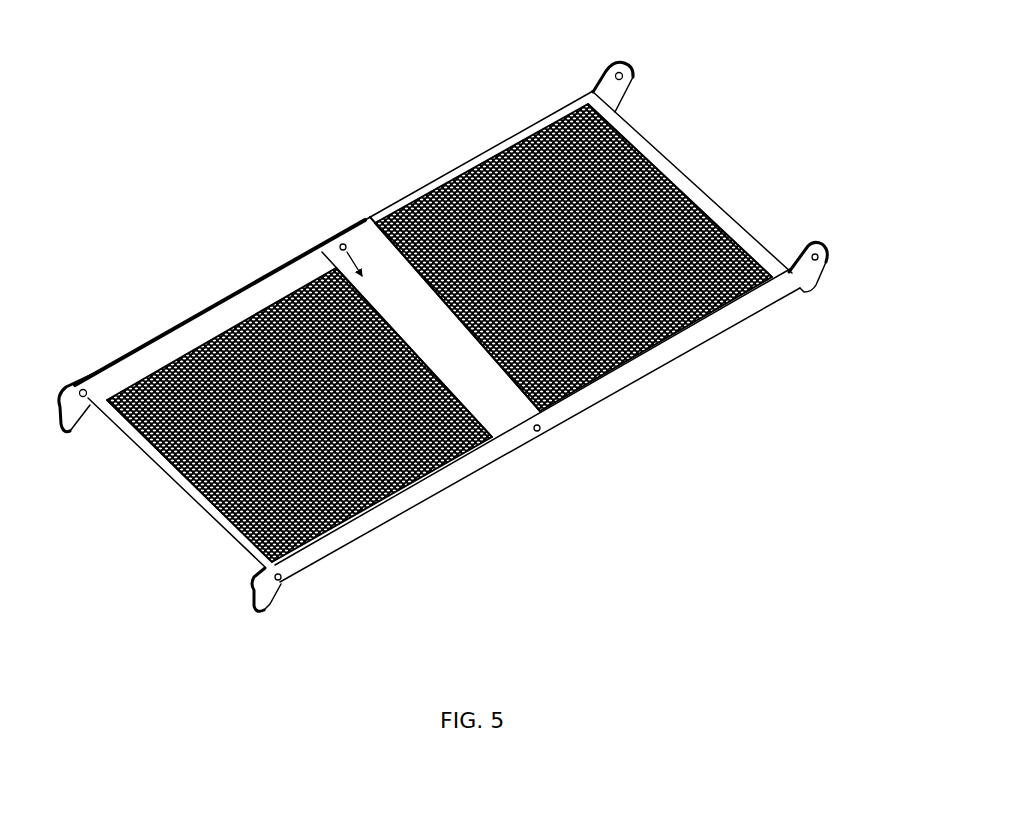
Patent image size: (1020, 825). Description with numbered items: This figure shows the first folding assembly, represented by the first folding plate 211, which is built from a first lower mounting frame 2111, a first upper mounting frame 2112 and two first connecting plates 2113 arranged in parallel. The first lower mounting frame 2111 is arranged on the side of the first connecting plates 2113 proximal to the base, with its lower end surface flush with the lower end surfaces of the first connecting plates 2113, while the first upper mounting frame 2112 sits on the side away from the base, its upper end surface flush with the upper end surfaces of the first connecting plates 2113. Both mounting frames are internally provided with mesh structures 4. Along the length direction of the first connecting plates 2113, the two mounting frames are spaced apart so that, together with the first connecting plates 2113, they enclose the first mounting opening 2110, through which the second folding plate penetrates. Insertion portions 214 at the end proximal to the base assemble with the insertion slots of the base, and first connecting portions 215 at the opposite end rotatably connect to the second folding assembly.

The mesh structures 4 is at (470, 170).
The first folding plate 211 is at (613, 385).
The first mounting opening 2110 is at (338, 245).
The first lower mounting frame 2111 is at (182, 488).
The first upper mounting frame 2112 is at (673, 170).
The first connecting plates 2113 is at (207, 308).
The insertion portions 214 is at (68, 433).
The first connecting portions 215 is at (623, 58).